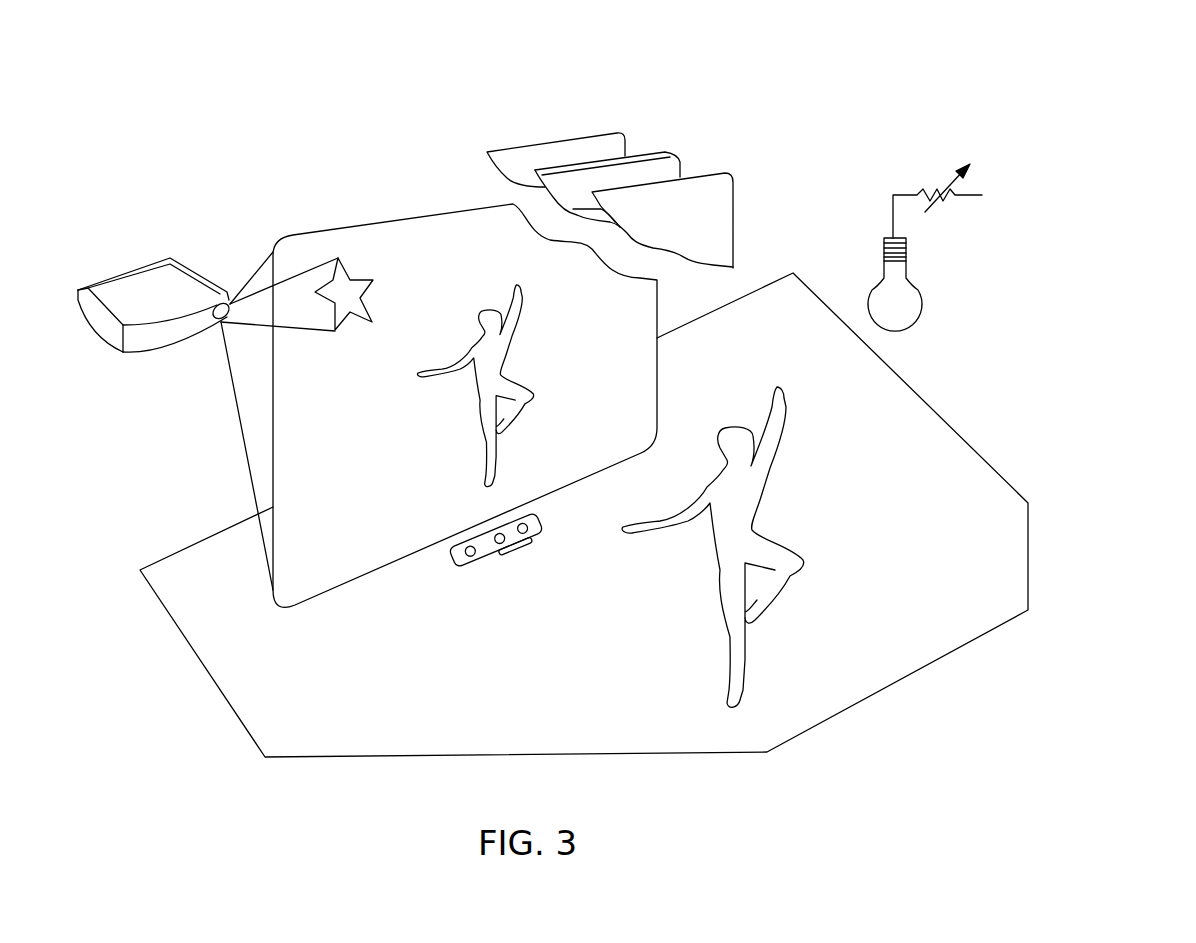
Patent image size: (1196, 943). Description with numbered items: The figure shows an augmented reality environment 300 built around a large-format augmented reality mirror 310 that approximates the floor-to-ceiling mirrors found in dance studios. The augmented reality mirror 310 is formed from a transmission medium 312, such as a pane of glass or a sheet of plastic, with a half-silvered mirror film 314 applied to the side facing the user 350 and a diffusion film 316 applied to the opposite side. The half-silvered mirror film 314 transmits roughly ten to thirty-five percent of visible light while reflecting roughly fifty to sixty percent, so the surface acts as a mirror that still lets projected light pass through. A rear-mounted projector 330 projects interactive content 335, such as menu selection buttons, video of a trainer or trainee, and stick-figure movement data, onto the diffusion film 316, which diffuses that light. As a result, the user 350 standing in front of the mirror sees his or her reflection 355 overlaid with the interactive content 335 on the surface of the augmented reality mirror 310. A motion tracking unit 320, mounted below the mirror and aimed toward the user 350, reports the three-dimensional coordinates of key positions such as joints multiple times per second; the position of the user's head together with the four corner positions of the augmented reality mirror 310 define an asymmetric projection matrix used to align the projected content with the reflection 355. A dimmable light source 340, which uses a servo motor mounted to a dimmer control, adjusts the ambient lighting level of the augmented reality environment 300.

The augmented reality environment 300 is at (1025, 64).
The augmented reality mirror 310 is at (382, 221).
The transmission medium 312 is at (658, 150).
The half-silvered mirror film 314 is at (720, 174).
The diffusion film 316 is at (608, 132).
The motion tracking unit 320 is at (471, 568).
The projector 330 is at (150, 260).
The interactive content 335 is at (350, 330).
The dimmable light source 340 is at (907, 193).
The user 350 is at (777, 385).
The reflection 355 is at (444, 364).